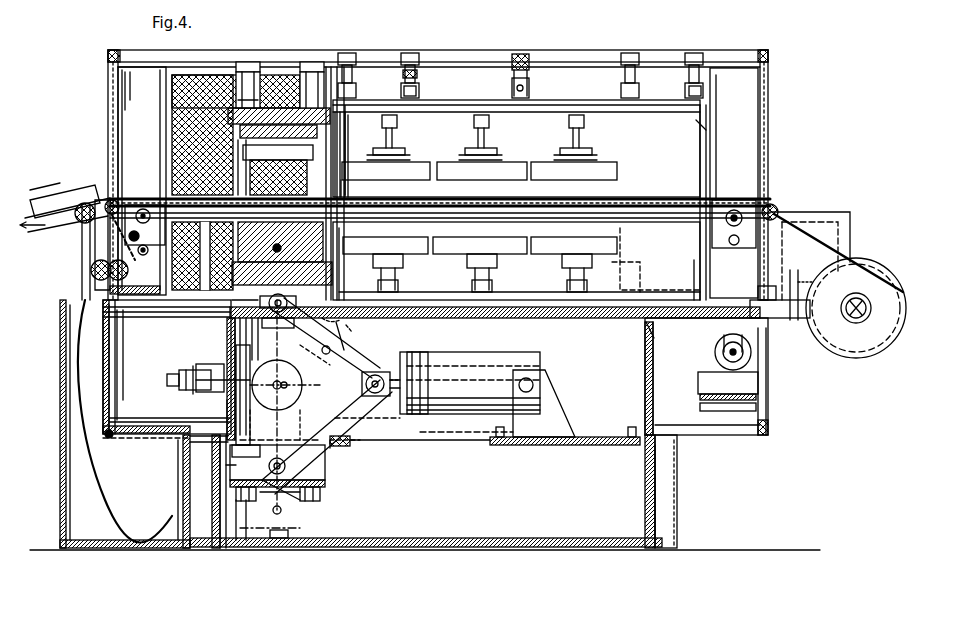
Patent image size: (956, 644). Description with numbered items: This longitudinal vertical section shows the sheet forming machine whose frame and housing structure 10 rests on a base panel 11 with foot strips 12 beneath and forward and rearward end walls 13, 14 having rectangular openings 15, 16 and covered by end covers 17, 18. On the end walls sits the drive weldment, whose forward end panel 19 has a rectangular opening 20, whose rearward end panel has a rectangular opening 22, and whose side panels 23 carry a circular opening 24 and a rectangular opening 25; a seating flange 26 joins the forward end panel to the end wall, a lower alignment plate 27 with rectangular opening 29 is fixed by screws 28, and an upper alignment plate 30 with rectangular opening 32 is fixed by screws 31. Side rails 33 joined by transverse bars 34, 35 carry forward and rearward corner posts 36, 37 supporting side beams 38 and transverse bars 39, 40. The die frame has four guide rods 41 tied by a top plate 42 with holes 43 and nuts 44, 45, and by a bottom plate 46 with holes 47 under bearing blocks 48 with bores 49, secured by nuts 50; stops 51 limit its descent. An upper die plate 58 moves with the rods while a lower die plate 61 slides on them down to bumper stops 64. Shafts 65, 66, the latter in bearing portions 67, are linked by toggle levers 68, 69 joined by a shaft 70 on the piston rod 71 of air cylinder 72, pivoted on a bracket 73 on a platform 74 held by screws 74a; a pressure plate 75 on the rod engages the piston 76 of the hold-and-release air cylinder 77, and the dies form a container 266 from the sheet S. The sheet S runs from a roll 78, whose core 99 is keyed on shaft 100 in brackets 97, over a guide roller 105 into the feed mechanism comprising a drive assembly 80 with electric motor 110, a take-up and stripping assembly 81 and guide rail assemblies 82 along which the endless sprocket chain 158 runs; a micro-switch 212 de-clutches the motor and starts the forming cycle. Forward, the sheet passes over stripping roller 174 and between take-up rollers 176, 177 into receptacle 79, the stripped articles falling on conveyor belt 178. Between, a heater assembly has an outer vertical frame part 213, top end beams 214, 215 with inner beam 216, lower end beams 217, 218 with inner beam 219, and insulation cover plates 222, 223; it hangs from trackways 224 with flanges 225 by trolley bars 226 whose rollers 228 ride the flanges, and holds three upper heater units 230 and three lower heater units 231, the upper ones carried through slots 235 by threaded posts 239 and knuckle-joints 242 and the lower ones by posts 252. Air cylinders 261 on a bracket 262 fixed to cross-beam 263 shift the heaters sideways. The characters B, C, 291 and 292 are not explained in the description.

The frame and housing structure 10 is at (84, 78).
The base panel 11 is at (424, 548).
The foot strips 12 is at (478, 548).
The forward end wall 13 is at (212, 548).
The rearward end wall 14 is at (628, 40).
The rectangular opening 15 is at (216, 504).
The rectangular opening 16 is at (660, 504).
The end cover 17 is at (184, 490).
The end cover 18 is at (678, 488).
The forward end panel 19 is at (226, 340).
The rectangular opening 20 is at (226, 356).
The rectangular opening 22 is at (650, 410).
The side panels 23 is at (474, 438).
The circular opening 24 is at (272, 408).
The rectangular opening 25 is at (392, 416).
The seating flange 26 is at (226, 422).
The lower alignment plate 27 is at (346, 442).
The screws 28 is at (350, 430).
The rectangular opening 29 is at (326, 472).
The upper alignment plate 30 is at (340, 320).
The screws 31 is at (370, 334).
The rectangular opening 32 is at (342, 338).
The side rails 33 is at (166, 424).
The transverse bar 34 is at (112, 436).
The transverse bar 35 is at (764, 436).
The corner posts 36 is at (110, 380).
The corner posts 37 is at (762, 390).
The side beams 38 is at (448, 56).
The forward transverse bar 39 is at (112, 52).
The rearward transverse bar 40 is at (764, 52).
The vertical guide rods 41 is at (246, 172).
The top plate 42 is at (258, 68).
The holes 43 is at (320, 62).
The nuts 44 is at (334, 62).
The nuts 45 is at (302, 62).
The bottom plate 46 is at (276, 504).
The holes 47 is at (324, 498).
The bearing blocks 48 is at (346, 494).
The bores 49 is at (226, 472).
The nuts 50 is at (224, 450).
The vertically adjustable stops 51 is at (280, 540).
The upper die plate 58 is at (340, 130).
The lower die plate 61 is at (210, 300).
The bumper stops 64 is at (222, 302).
The transverse shaft 65 is at (288, 492).
The transverse shaft 66 is at (274, 355).
The bearing portions 67 is at (286, 356).
The toggle levers 68 is at (342, 404).
The toggle levers 69 is at (352, 362).
The shaft 70 is at (402, 382).
The piston rod 71 is at (414, 362).
The air cylinder 72 is at (488, 366).
The bracket 73 is at (556, 382).
The horizontal platform 74 is at (606, 436).
The screws 74a is at (500, 448).
The pressure plate 75 is at (362, 382).
The piston 76 is at (240, 378).
The hold-and-release air cylinder 77 is at (176, 384).
The roll 78 is at (852, 358).
The receptacle 79 is at (62, 432).
The drive assembly 80 is at (735, 172).
The take-up and article stripping assembly 81 is at (139, 188).
The sprocket chain carrier guide rail assemblies 82 is at (536, 196).
The roll supporting brackets 97 is at (822, 212).
The core 99 is at (862, 310).
The shaft 100 is at (852, 320).
The guide roller 105 is at (780, 208).
The electric motor 110 is at (716, 368).
The endless sprocket chain 158 is at (656, 259).
The stripping roller 174 is at (105, 196).
The take-up roller 176 is at (92, 270).
The take-up roller 177 is at (128, 270).
The conveyor belt 178 is at (50, 186).
The micro-switch 212 is at (772, 286).
The rectangular outer vertical frame part 213 is at (692, 160).
The end beam 214 is at (734, 183).
The end beam 215 is at (356, 110).
The longitudinal inner beam 216 is at (470, 108).
The end beam 217 is at (690, 280).
The end beam 218 is at (346, 262).
The longitudinal inner beam 219 is at (440, 292).
The forward insulation cover plates 222 is at (352, 176).
The rearward insulation cover plates 223 is at (700, 138).
The transverse trackways 224 is at (412, 66).
The flanges 225 is at (420, 82).
The trolley bars 226 is at (420, 94).
The rollers 228 is at (404, 60).
The upper heater units 230 is at (430, 162).
The lower heater units 231 is at (418, 246).
The transverse slots 235 is at (484, 256).
The vertically adjustable threaded post 239 is at (492, 124).
The knuckle-joint 242 is at (498, 148).
The vertically adjustable post 252 is at (496, 270).
The air cylinders 261 is at (530, 82).
The bracket 262 is at (540, 70).
The cross-beam 263 is at (522, 54).
The container 266 is at (30, 190).
The side wall 291 is at (108, 110).
The panel 292 is at (166, 128).
The link B is at (326, 338).
The link C is at (310, 355).
The thermoplastic sheet material S is at (852, 248).